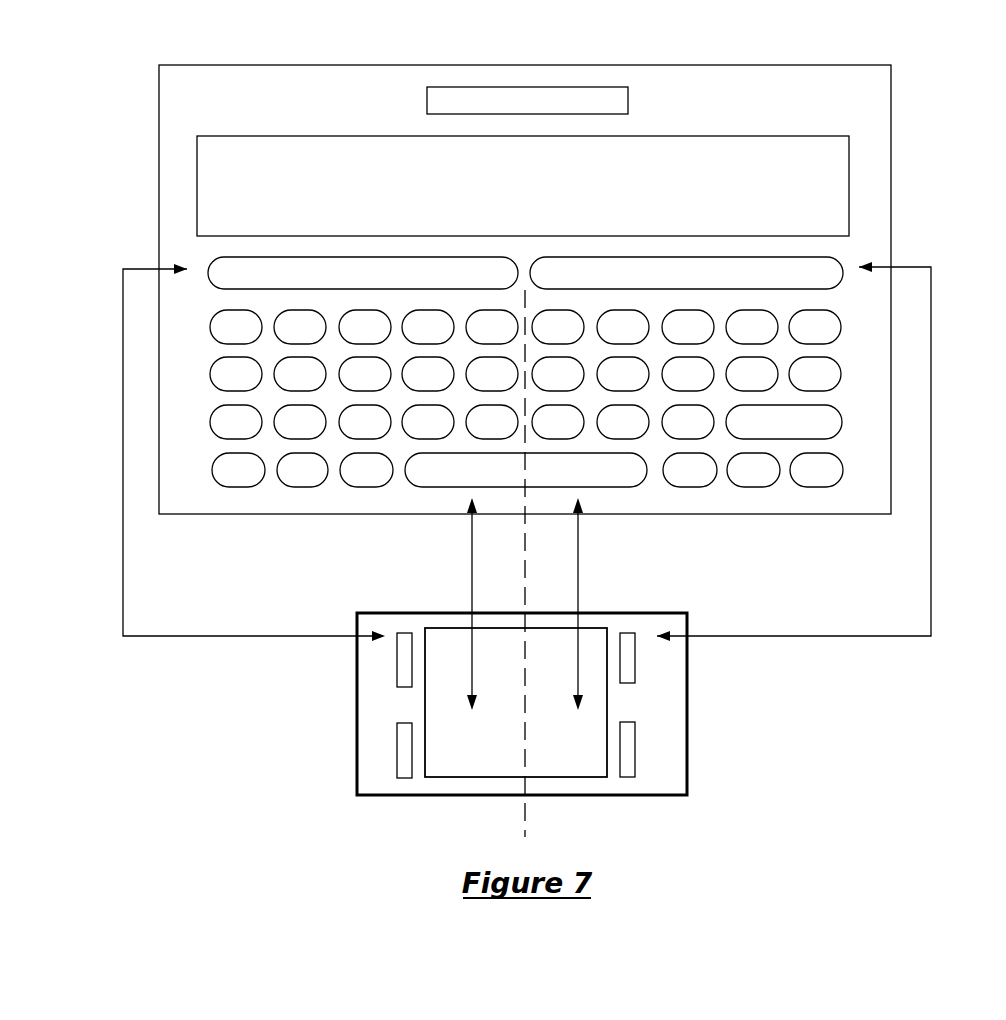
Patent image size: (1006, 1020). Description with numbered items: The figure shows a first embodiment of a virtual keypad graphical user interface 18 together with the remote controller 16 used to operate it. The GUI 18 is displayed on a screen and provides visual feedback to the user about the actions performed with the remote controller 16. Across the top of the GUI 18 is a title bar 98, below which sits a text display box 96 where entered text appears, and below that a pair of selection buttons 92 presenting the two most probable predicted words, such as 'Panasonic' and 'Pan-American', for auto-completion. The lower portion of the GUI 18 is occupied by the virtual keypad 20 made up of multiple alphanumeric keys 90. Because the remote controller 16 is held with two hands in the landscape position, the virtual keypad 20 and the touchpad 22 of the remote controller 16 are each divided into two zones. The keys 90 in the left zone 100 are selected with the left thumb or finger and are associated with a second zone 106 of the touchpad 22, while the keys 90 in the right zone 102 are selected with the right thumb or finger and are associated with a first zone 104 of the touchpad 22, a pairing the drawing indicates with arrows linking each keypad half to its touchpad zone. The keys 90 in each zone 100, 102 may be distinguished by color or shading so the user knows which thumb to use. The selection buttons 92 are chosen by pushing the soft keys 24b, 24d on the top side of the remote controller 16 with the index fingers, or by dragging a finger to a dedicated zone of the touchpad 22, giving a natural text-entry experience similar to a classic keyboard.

The graphical user interface 18 is at (158, 118).
The title bar 98 is at (628, 102).
The text display box 96 is at (765, 136).
The selection buttons 92 is at (845, 265).
The virtual keypad 20 is at (578, 446).
The alphanumeric keys 90 is at (210, 422).
The left zone 100 is at (410, 444).
The right zone 102 is at (777, 503).
The remote controller 16 is at (410, 612).
The touchpad 22 is at (596, 628).
The soft key 24b is at (396, 660).
The soft key 24d is at (636, 655).
The second zone of the touchpad 106 is at (476, 769).
The first zone of the touchpad 104 is at (563, 761).